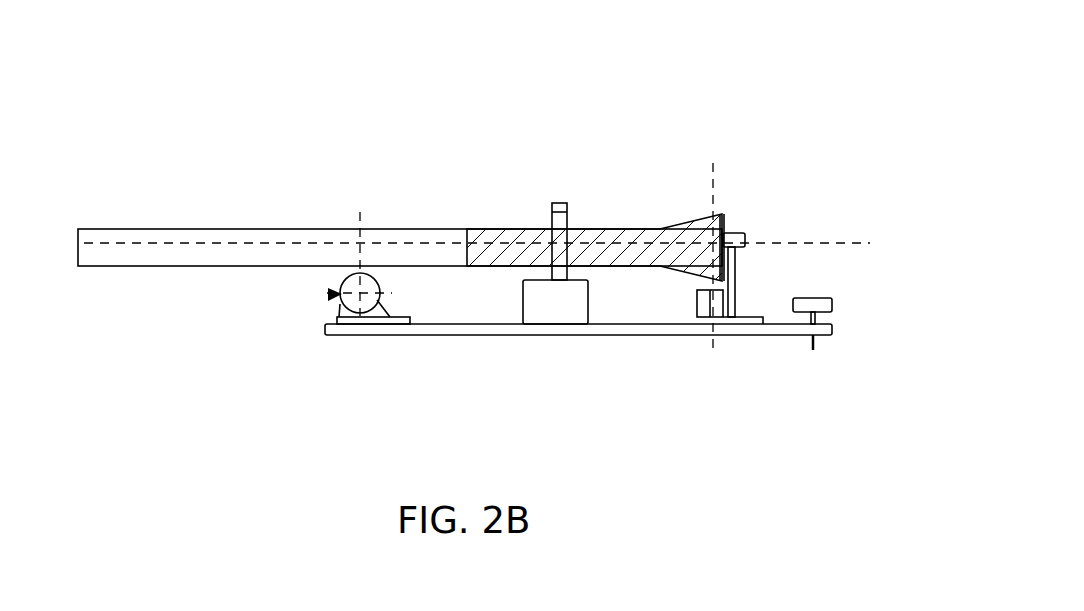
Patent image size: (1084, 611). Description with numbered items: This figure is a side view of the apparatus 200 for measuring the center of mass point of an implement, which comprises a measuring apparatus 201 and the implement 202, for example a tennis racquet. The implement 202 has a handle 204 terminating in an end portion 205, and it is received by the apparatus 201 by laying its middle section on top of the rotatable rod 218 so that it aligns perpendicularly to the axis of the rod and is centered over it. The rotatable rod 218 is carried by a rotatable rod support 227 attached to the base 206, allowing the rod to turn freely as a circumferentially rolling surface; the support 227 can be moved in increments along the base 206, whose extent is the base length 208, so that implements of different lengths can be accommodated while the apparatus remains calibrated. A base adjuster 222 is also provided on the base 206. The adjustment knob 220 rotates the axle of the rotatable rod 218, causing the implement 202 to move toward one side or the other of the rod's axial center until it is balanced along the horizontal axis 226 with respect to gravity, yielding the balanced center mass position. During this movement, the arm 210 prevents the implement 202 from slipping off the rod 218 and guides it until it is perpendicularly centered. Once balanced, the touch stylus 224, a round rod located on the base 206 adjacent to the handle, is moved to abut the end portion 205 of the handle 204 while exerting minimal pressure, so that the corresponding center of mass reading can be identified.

The apparatus 200 is at (216, 90).
The apparatus 201 is at (865, 172).
The implement 202 is at (167, 216).
The handle 204 is at (508, 228).
The end portion of the handle 205 is at (726, 216).
The base 206 is at (507, 336).
The base length 208 is at (832, 398).
The arm 210 is at (558, 203).
The rotatable rod 218 is at (342, 274).
The adjustment knob 220 is at (330, 296).
The base adjuster 222 is at (833, 305).
The touch stylus 224 is at (742, 234).
The horizontal axis 226 is at (818, 240).
The rotatable rod support 227 is at (370, 324).